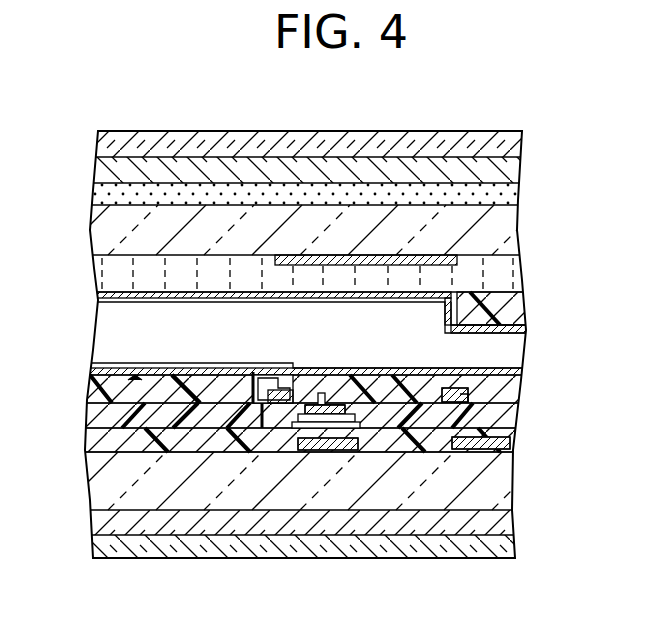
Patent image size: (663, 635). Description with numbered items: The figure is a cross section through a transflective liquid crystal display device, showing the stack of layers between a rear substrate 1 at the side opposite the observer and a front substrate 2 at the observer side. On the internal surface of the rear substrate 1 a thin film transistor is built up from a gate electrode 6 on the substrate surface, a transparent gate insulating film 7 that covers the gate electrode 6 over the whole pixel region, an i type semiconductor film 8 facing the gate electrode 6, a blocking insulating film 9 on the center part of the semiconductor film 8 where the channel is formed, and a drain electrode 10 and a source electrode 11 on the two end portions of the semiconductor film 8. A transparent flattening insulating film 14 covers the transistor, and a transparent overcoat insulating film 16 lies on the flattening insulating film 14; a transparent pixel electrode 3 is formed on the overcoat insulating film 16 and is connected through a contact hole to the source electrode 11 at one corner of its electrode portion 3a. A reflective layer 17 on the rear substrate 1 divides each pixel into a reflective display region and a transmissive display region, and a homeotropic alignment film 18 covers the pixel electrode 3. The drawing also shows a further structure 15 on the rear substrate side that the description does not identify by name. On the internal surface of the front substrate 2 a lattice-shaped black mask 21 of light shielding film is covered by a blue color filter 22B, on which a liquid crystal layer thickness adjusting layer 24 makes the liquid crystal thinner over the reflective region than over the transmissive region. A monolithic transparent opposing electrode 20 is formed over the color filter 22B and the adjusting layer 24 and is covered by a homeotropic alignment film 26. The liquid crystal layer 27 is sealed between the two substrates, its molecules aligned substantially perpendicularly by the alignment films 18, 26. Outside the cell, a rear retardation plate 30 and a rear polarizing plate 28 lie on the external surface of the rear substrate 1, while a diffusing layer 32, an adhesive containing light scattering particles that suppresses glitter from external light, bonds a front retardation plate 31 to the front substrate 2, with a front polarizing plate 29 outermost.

The rear substrate 1 is at (100, 485).
The front substrate 2 is at (100, 240).
The pixel electrode 3 is at (135, 380).
The electrode portion 3a is at (181, 403).
The gate electrode 6 is at (300, 428).
The gate insulating film 7 is at (100, 441).
The i type semiconductor film 8 is at (333, 414).
The blocking insulating film 9 is at (321, 393).
The drain electrode 10 is at (352, 422).
The source electrode 11 is at (266, 428).
The flattening insulating film 14 is at (505, 420).
The spacer 15 is at (447, 402).
The overcoat insulating film 16 is at (510, 390).
The reflective layer 17 is at (500, 442).
The homeotropic alignment film 18 is at (258, 375).
The opposing electrode 20 is at (222, 288).
The black mask 21 is at (378, 255).
The blue color filter 22B is at (147, 262).
The liquid crystal layer thickness adjusting layer 24 is at (520, 312).
The homeotropic alignment film 26 is at (350, 300).
The liquid crystal layer 27 is at (113, 330).
The rear polarizing plate 28 is at (513, 548).
The front polarizing plate 29 is at (515, 141).
The retardation plate 30 is at (512, 522).
The retardation plate 31 is at (517, 168).
The diffusing layer 32 is at (517, 190).